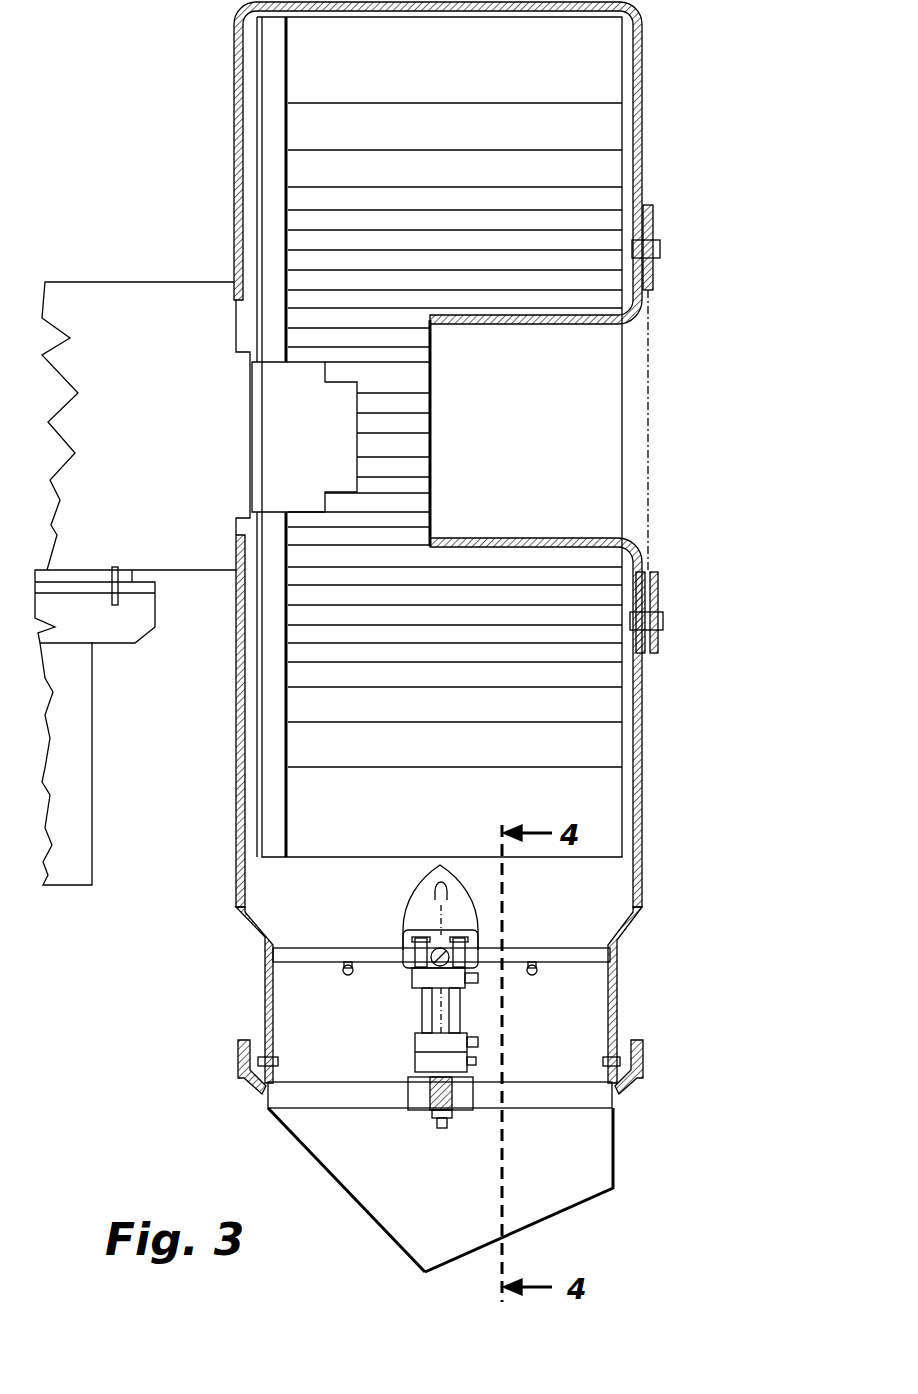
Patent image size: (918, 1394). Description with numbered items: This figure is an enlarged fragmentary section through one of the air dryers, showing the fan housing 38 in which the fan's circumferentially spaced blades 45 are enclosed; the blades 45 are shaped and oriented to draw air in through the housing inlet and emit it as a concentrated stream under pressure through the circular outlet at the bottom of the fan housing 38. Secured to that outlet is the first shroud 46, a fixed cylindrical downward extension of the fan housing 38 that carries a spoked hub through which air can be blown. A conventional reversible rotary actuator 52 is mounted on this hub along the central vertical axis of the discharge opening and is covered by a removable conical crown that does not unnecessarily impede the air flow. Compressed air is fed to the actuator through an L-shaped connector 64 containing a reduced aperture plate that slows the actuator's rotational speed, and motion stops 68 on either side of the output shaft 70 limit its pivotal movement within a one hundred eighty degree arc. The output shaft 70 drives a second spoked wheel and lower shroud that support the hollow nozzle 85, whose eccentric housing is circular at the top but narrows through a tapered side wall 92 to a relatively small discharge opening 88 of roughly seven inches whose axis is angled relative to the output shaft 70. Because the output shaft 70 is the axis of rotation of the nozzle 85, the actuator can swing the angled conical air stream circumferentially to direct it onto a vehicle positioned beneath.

The fan housing 38 is at (233, 87).
The blades 45 is at (556, 628).
The first shroud 46 is at (617, 1012).
The rotary actuator 52 is at (380, 1012).
The L-shaped connector 64 is at (473, 1042).
The adjustment screws or motion stops 68 is at (476, 1061).
The output shaft 70 is at (428, 1110).
The nozzle 85 is at (660, 1124).
The discharge opening 88 is at (580, 1207).
The tapered side wall 92 is at (308, 1152).